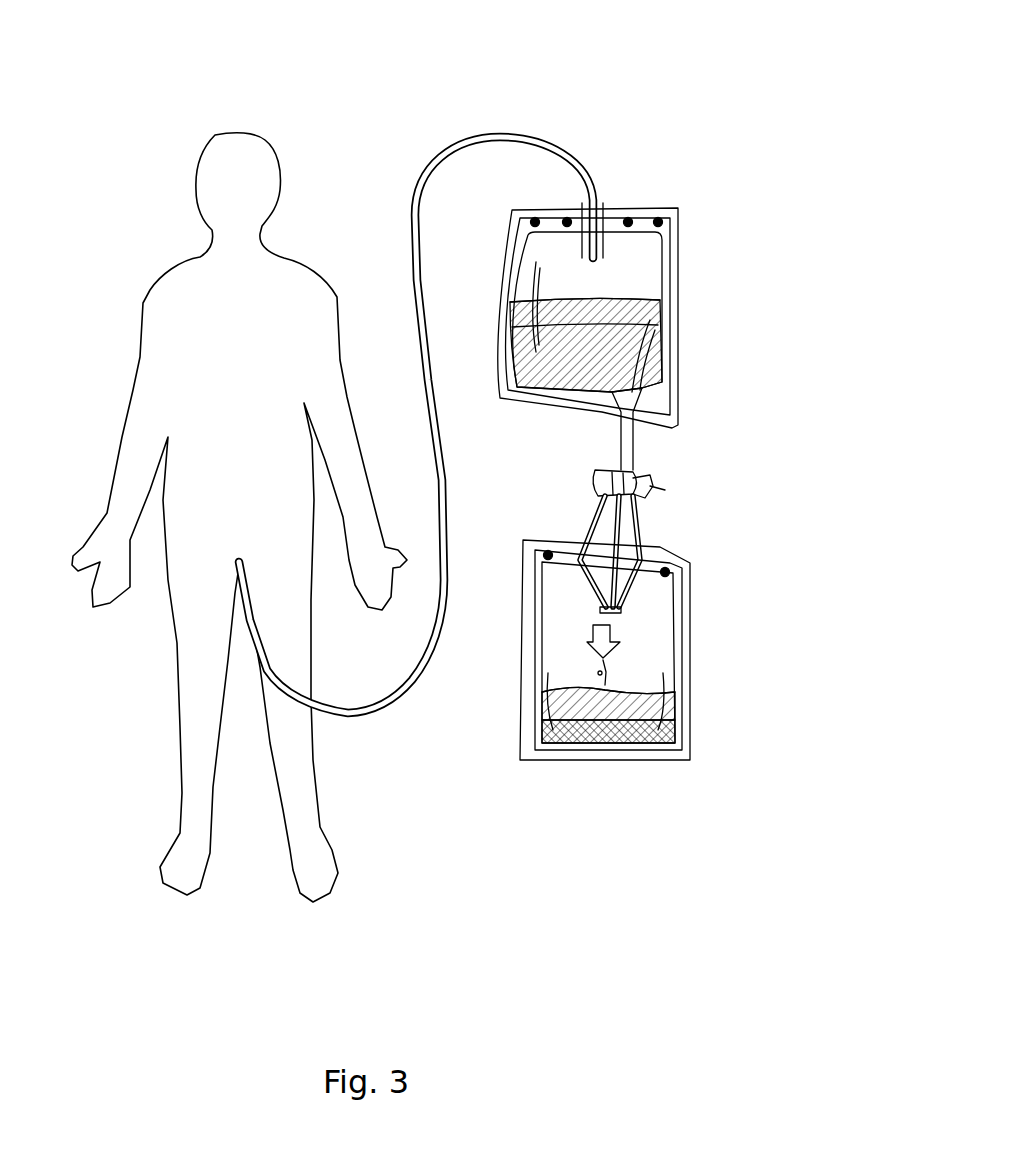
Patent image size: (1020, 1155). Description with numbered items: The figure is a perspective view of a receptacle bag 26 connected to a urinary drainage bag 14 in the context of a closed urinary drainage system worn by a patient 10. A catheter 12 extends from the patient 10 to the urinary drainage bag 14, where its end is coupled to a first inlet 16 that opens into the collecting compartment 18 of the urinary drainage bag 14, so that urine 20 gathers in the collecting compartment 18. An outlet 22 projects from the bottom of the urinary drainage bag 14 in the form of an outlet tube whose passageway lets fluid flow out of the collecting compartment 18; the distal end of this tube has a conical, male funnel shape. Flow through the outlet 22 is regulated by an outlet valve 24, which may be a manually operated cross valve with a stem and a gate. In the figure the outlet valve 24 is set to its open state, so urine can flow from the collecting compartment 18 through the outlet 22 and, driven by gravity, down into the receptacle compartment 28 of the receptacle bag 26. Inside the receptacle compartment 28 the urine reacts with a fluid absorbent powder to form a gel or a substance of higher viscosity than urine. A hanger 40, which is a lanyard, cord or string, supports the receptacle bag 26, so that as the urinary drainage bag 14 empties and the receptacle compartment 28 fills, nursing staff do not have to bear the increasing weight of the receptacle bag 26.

The patient 10 is at (272, 102).
The catheter 12 is at (482, 133).
The urinary drainage bag 14 is at (638, 128).
The first inlet 16 is at (600, 203).
The collecting compartment 18 is at (640, 250).
The urine 20 is at (633, 340).
The outlet 22 is at (634, 435).
The outlet valve 24 is at (650, 486).
The receptacle bag 26 is at (720, 565).
The receptacle compartment 28 is at (650, 633).
The hanger 40 is at (590, 523).